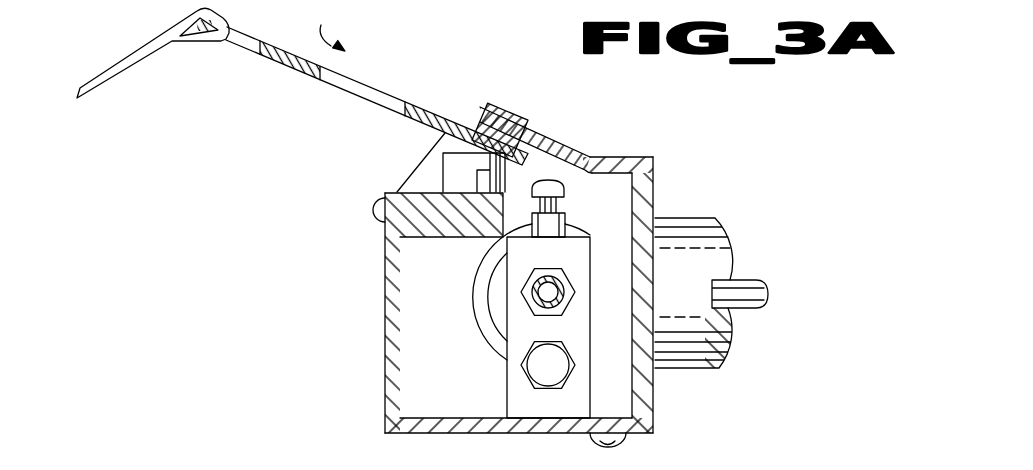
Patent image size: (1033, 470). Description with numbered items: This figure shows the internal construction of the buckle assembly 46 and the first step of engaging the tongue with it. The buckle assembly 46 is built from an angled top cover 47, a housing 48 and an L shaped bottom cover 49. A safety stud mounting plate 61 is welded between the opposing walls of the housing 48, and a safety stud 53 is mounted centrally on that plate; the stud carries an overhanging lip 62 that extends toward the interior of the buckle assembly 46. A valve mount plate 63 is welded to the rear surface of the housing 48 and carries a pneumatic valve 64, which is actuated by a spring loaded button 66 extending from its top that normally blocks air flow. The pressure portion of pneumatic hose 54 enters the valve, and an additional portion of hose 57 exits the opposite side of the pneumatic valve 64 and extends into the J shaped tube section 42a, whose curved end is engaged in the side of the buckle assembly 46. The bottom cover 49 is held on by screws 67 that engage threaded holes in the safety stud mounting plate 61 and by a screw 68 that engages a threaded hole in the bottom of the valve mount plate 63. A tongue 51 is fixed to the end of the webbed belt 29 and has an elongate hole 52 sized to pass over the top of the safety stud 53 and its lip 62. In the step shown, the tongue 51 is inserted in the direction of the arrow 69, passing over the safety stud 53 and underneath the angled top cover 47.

The webbed belt 29 is at (87, 93).
The tongue 51 is at (290, 68).
The arrow 69 is at (344, 25).
The elongate hole 52 is at (410, 103).
The overhanging lip 62 is at (506, 119).
The top cover 47 is at (573, 152).
The buckle assembly 46 is at (655, 128).
The safety stud 53 is at (440, 161).
The button 66 is at (561, 195).
The screws 67 is at (372, 213).
The safety stud mounting plate 61 is at (466, 241).
The J shaped tube section 42a is at (487, 318).
The pressure portion of pneumatic hose 54 is at (557, 289).
The valve mount plate 63 is at (627, 355).
The additional portion of pneumatic hose 57 is at (763, 295).
The pneumatic valve 64 is at (513, 393).
The bottom cover 49 is at (388, 430).
The housing 48 is at (648, 402).
The screw 68 is at (625, 445).